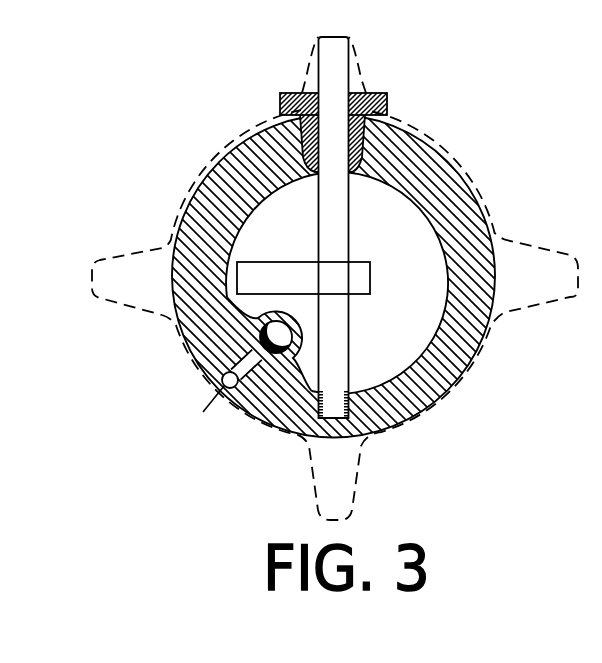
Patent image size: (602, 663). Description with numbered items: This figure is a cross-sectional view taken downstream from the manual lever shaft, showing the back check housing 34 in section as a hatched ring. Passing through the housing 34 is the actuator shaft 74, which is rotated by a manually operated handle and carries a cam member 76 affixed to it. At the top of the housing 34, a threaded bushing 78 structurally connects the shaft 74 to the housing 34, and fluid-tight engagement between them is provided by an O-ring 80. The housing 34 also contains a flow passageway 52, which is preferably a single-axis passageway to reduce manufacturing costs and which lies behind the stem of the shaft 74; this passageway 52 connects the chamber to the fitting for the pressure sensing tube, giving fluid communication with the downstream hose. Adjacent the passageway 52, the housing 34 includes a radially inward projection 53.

The back check housing 34 is at (455, 242).
The flow passageway 52 is at (240, 367).
The radially inward projection 53 is at (256, 321).
The actuator shaft 74 is at (348, 235).
The cam member 76 is at (350, 280).
The threaded bushing 78 is at (387, 107).
The O-ring 80 is at (362, 160).